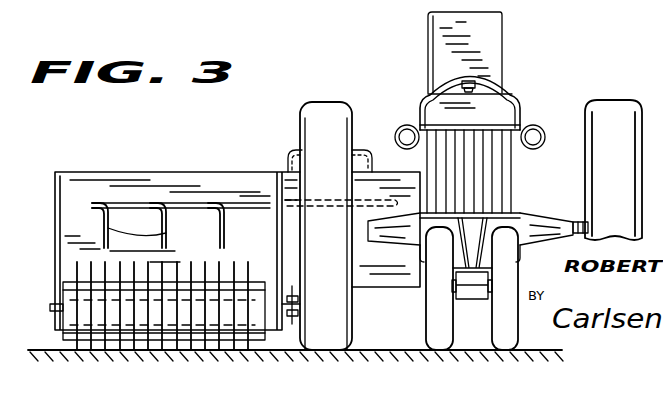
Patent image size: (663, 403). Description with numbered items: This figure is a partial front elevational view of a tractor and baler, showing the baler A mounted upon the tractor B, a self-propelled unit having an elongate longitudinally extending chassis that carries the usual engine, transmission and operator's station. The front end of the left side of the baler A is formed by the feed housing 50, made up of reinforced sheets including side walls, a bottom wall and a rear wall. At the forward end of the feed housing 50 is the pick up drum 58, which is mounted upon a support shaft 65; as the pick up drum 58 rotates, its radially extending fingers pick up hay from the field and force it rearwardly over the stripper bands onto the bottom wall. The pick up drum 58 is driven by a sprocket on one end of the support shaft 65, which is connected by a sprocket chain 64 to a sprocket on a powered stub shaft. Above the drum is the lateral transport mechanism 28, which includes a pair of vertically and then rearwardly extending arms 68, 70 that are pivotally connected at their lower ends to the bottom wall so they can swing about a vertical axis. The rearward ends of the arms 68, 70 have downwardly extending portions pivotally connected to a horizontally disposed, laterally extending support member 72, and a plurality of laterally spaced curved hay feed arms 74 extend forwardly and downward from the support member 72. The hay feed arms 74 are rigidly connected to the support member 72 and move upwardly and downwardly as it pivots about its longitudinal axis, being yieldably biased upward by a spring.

The baler A is at (221, 229).
The tractor B is at (420, 96).
The feed housing 50 is at (54, 240).
The lateral transport mechanism 28 is at (130, 202).
The support member 72 is at (200, 205).
The hay feed arms 74 is at (222, 242).
The pick up drum 58 is at (68, 296).
The sprocket chain 64 is at (298, 292).
The support shaft 65 is at (55, 308).
The member or arm 68 is at (287, 152).
The member or arm 70 is at (378, 154).